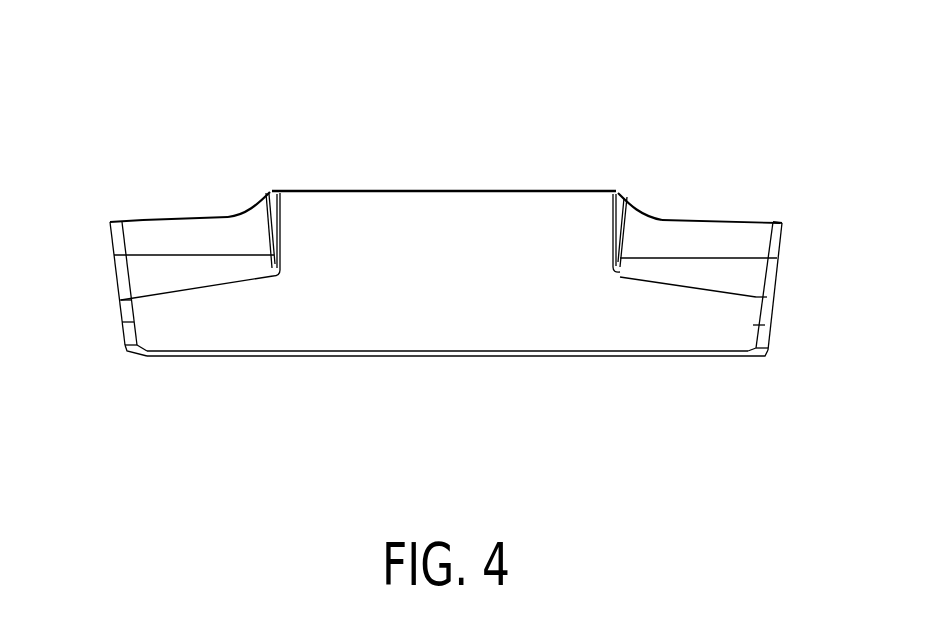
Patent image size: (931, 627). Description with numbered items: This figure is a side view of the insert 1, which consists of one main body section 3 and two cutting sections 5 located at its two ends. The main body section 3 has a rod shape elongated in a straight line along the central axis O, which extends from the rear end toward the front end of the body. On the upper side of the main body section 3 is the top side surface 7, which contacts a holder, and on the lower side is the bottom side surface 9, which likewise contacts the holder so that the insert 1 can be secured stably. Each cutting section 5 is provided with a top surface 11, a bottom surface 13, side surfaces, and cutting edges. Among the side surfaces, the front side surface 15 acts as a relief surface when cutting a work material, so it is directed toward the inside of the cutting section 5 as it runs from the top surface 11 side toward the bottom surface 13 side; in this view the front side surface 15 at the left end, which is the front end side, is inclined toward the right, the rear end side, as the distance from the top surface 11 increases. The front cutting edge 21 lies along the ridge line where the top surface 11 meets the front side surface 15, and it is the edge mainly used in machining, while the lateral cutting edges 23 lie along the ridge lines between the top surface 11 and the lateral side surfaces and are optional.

The insert 1 is at (438, 259).
The main body section 3 is at (272, 394).
The cutting section 5 is at (442, 266).
The top side surface 7 is at (520, 188).
The bottom side surface 9 is at (510, 357).
The top surface 11 is at (187, 218).
The bottom surface 13 is at (163, 357).
The front side surface 15 is at (113, 275).
The front cutting edge 21 is at (110, 221).
The lateral cutting edge 23 is at (142, 219).
The central axis O is at (122, 296).